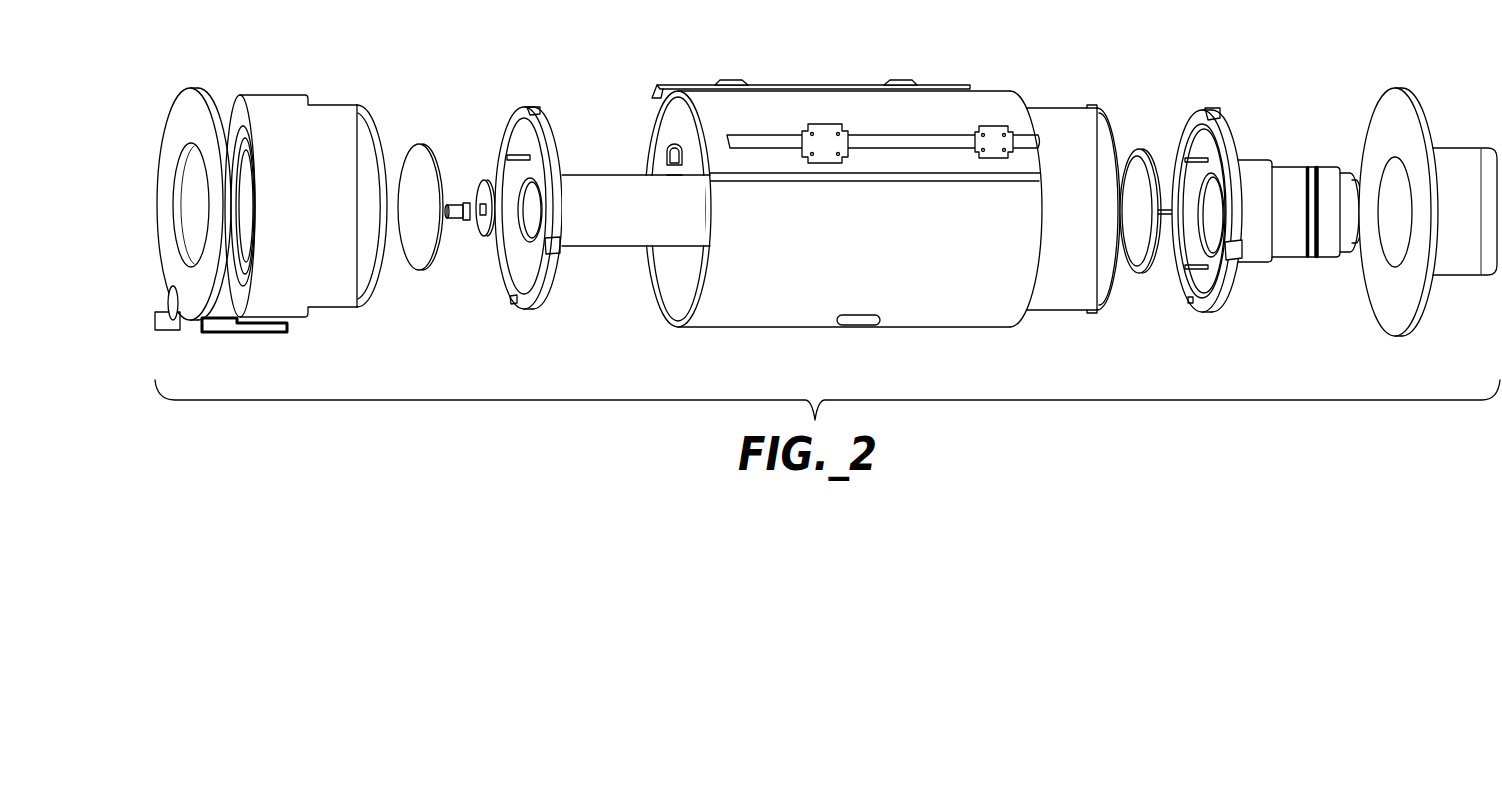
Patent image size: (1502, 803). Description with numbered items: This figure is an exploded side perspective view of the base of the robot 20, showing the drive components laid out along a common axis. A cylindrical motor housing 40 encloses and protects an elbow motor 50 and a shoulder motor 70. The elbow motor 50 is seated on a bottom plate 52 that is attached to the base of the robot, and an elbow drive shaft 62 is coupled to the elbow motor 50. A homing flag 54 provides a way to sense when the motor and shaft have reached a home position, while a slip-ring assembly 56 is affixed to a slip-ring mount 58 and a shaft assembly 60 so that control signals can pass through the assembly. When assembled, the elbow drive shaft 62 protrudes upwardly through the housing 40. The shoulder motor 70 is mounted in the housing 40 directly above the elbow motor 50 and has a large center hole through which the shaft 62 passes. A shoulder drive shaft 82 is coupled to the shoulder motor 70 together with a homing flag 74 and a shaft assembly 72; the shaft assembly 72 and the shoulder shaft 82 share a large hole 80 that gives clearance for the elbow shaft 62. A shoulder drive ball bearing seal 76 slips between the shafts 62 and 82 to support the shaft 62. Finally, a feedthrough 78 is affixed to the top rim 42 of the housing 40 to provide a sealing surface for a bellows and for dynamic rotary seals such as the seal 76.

The robot 20 is at (665, 46).
The cylindrical motor housing 40 is at (977, 90).
The top rim 42 is at (1013, 97).
The elbow motor 50 is at (333, 307).
The bottom plate 52 is at (195, 83).
The homing flag 54 is at (417, 145).
The slip-ring assembly 56 is at (452, 226).
The slip-ring mount 58 is at (485, 178).
The shaft assembly 60 is at (525, 105).
The elbow drive shaft 62 is at (623, 190).
The shoulder motor 70 is at (1070, 312).
The shaft assembly 72 is at (1200, 110).
The homing flag 74 is at (1140, 275).
The shoulder drive ball bearing seal 76 is at (1353, 170).
The feedthrough 78 is at (1393, 333).
The large hole 80 is at (1208, 225).
The shoulder drive shaft 82 is at (1288, 172).